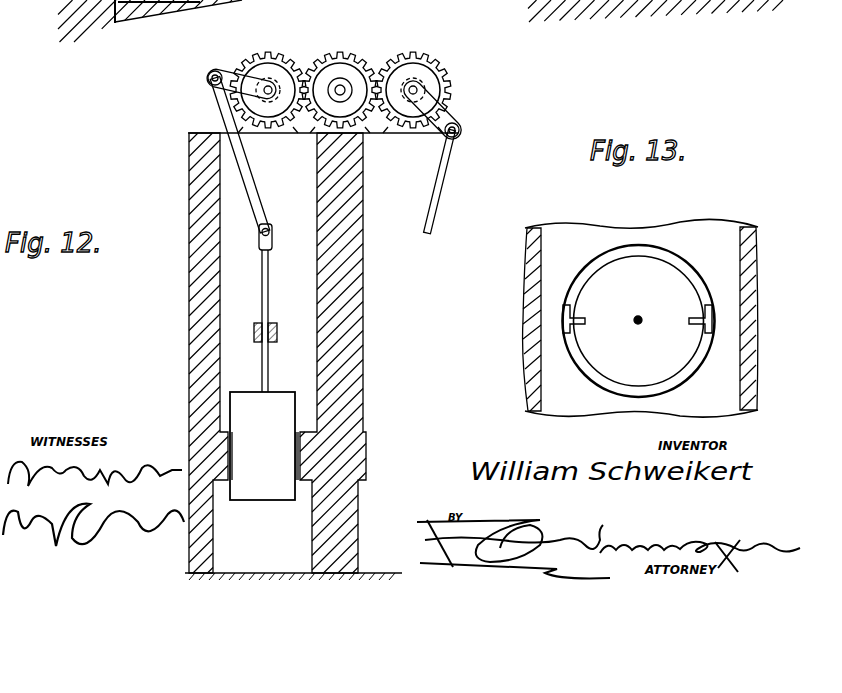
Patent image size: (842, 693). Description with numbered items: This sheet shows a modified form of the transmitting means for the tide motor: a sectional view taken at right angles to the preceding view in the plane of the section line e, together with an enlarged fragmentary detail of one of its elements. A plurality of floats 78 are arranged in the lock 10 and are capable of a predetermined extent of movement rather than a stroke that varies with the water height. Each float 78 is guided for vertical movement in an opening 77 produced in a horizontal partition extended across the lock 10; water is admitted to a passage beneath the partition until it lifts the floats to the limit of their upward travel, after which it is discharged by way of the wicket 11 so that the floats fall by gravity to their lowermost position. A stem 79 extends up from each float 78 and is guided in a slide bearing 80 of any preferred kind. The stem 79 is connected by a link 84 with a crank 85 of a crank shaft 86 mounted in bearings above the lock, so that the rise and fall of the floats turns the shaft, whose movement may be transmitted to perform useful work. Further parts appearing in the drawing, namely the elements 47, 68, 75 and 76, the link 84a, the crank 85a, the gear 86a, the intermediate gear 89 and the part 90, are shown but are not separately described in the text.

In FIG. 12, the lock 10 is at (321, 353).
In FIG. 13, the lock 10 is at (640, 318).
In FIG. 12, the wicket 11 is at (121, 21).
In FIG. 12, the support bar 47 is at (632, 0).
In FIG. 12, the guide plate 68 is at (165, 2).
In FIG. 12, the chamber 75 is at (247, 527).
In FIG. 12, the slot 76 is at (300, 478).
In FIG. 13, the slot 76 is at (585, 397).
In FIG. 12, the openings 77 is at (226, 435).
In FIG. 13, the openings 77 is at (676, 258).
In FIG. 12, the floats 78 is at (262, 446).
In FIG. 13, the floats 78 is at (637, 305).
In FIG. 12, the stems 79 is at (282, 270).
In FIG. 13, the stems 79 is at (636, 328).
In FIG. 12, the slide bearings 80 is at (254, 330).
In FIG. 12, the links 84 is at (250, 170).
In FIG. 12, the connecting rod 84a is at (434, 188).
In FIG. 12, the cranks 85 is at (224, 94).
In FIG. 12, the crank 85a is at (452, 115).
In FIG. 12, the crank shaft 86 is at (268, 90).
In FIG. 12, the gear 86a is at (413, 90).
In FIG. 12, the intermediate gear 89 is at (345, 68).
In FIG. 12, the crank disk 90 is at (448, 78).
In FIG. 12, the section line e is at (304, 22).